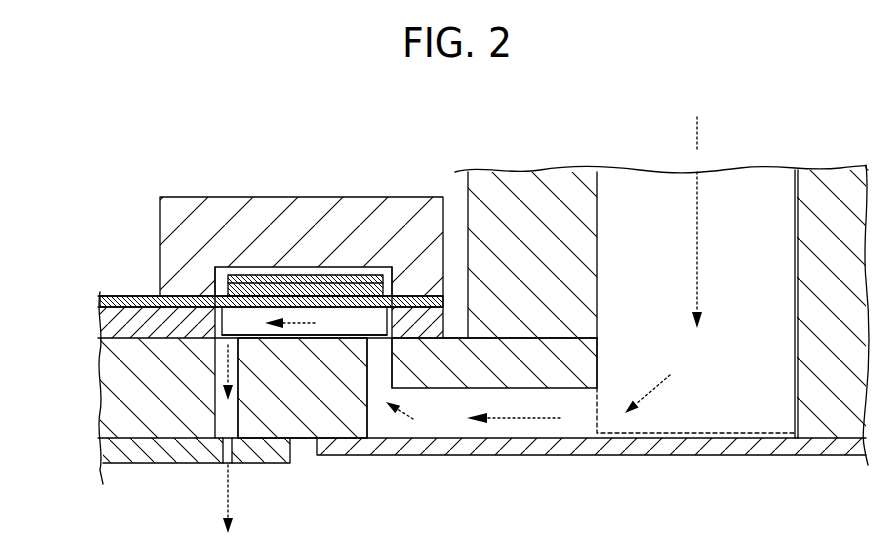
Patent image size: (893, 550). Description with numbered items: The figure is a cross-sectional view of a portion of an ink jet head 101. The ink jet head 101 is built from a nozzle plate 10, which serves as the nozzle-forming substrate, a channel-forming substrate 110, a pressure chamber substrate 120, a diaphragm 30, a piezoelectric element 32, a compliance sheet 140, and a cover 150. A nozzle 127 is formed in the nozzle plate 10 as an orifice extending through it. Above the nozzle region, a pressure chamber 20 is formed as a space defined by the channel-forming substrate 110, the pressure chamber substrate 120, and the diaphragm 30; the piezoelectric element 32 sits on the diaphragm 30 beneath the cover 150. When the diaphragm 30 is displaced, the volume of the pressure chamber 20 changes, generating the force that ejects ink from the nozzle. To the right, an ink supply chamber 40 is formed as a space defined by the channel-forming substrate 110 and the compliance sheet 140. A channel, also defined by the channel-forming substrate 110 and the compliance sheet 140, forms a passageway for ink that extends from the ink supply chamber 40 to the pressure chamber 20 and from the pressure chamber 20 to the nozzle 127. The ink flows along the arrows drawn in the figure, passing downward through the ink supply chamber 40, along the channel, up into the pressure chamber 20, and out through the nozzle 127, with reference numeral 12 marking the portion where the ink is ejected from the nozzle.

The ink jet head 101 is at (780, 87).
The channel-forming substrate 110 is at (522, 205).
The ink supply chamber 40 is at (646, 193).
The cover 150 is at (325, 213).
The piezoelectric element 32 is at (253, 282).
The diaphragm 30 is at (128, 308).
The pressure chamber substrate 120 is at (128, 326).
The pressure chamber 20 is at (215, 351).
The portion where the ink is ejected 12 is at (228, 478).
The nozzle plate 10 is at (133, 455).
The nozzle 127 is at (220, 442).
The compliance sheet 140 is at (652, 445).